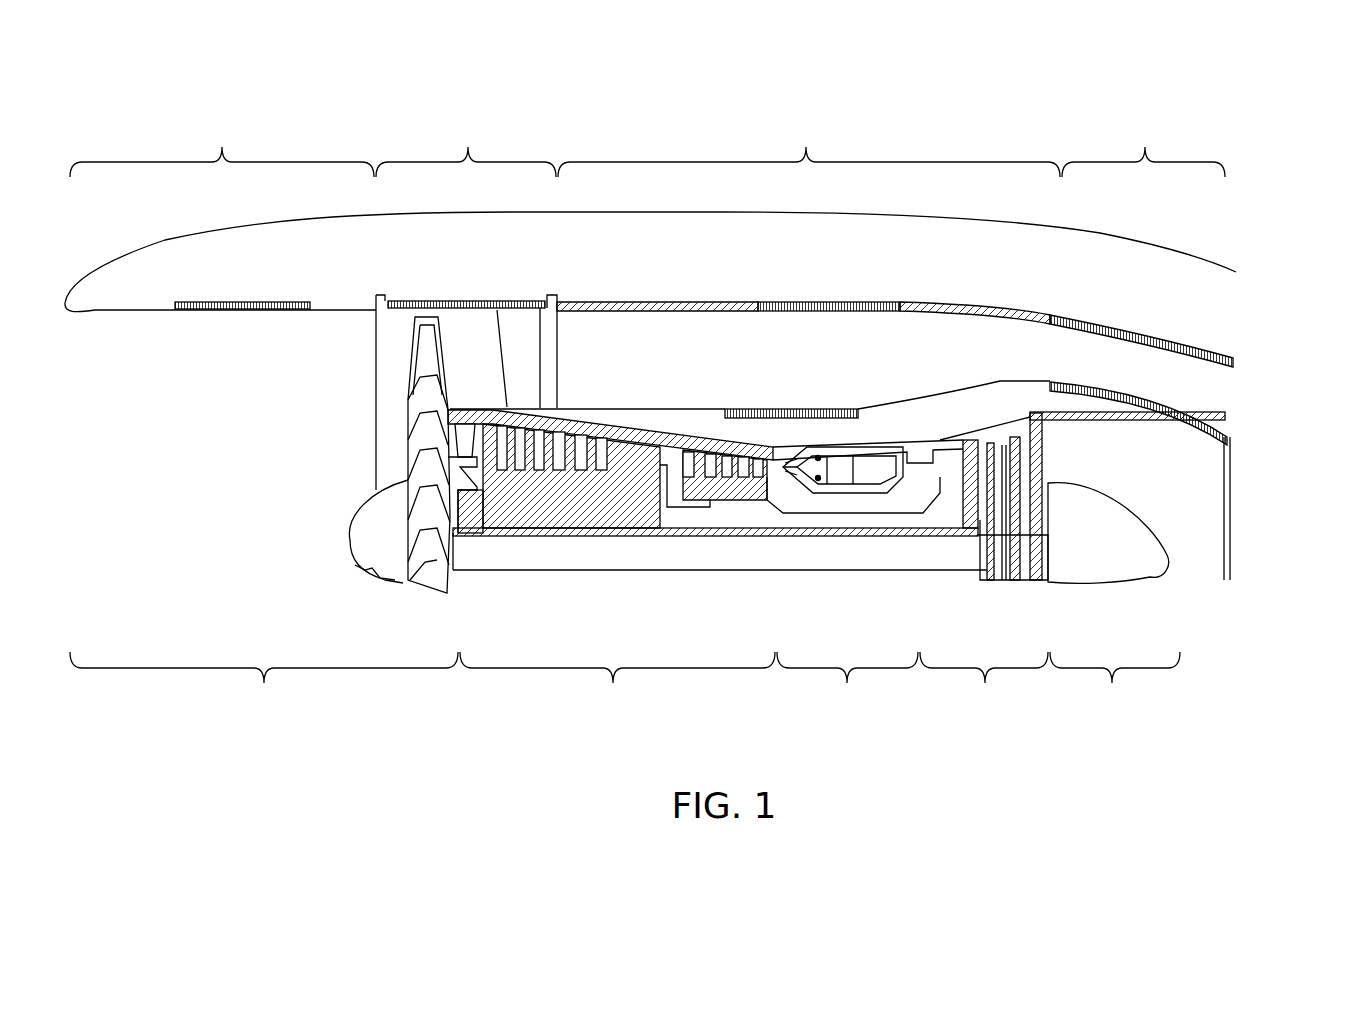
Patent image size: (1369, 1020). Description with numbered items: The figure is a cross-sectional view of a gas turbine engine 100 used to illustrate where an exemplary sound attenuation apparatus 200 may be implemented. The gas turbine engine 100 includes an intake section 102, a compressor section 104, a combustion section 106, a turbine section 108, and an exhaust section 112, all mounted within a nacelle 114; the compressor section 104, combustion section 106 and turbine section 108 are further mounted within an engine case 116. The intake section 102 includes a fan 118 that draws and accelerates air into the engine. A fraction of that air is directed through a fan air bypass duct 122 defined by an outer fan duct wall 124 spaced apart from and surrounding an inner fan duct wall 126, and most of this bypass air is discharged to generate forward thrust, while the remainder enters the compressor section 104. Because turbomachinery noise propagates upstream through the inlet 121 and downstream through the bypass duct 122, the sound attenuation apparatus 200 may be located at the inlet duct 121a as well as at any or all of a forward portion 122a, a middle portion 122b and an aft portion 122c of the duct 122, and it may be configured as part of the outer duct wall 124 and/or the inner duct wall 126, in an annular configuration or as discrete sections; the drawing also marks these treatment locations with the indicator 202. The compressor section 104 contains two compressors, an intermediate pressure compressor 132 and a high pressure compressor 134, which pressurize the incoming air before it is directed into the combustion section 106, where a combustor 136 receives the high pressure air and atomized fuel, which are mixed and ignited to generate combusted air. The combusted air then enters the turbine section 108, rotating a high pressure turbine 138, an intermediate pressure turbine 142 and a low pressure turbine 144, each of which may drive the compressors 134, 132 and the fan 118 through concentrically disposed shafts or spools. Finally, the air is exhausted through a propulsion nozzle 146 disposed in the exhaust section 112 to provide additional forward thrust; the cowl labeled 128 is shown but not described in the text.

The gas turbine engine 100 is at (622, 142).
The intake section 102 is at (264, 685).
The compressor section 104 is at (617, 685).
The combustion section 106 is at (847, 685).
The turbine section 108 is at (984, 685).
The exhaust section 112 is at (1115, 685).
The nacelle 114 is at (1072, 226).
The engine case 116 is at (473, 409).
The fan 118 is at (411, 407).
The inlet 121 is at (190, 445).
The inlet duct 121a is at (222, 145).
The fan air bypass duct 122 is at (584, 367).
The forward portion of duct 122a is at (466, 145).
The middle portion of duct 122b is at (809, 145).
The aft portion of duct 122c is at (1143, 145).
The outer fan duct wall 124 is at (585, 301).
The inner fan duct wall 126 is at (800, 408).
The core cowl 128 is at (689, 421).
The intermediate pressure compressor 132 is at (553, 507).
The high pressure compressor 134 is at (733, 490).
The combustor 136 is at (897, 450).
The high pressure turbine 138 is at (930, 463).
The intermediate pressure turbine 142 is at (985, 455).
The low pressure turbine 144 is at (1035, 440).
The propulsion nozzle 146 is at (1208, 500).
The sound attenuation apparatus 200 is at (250, 302).
The acoustic treatment locations 202 is at (402, 320).